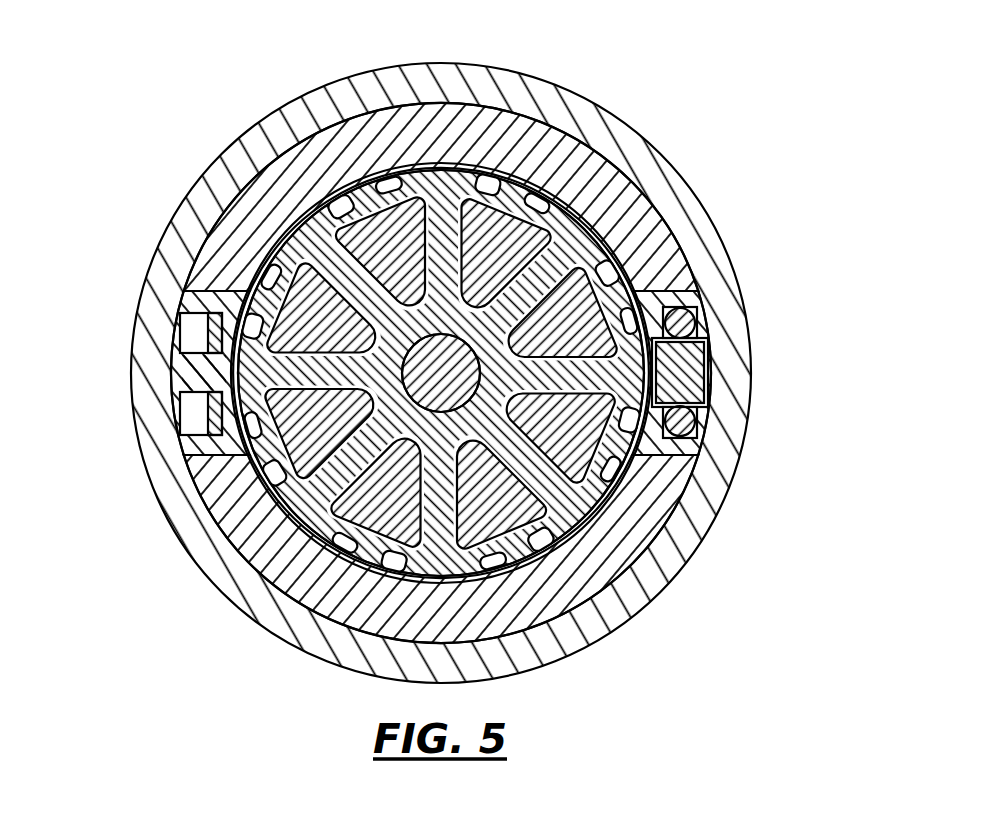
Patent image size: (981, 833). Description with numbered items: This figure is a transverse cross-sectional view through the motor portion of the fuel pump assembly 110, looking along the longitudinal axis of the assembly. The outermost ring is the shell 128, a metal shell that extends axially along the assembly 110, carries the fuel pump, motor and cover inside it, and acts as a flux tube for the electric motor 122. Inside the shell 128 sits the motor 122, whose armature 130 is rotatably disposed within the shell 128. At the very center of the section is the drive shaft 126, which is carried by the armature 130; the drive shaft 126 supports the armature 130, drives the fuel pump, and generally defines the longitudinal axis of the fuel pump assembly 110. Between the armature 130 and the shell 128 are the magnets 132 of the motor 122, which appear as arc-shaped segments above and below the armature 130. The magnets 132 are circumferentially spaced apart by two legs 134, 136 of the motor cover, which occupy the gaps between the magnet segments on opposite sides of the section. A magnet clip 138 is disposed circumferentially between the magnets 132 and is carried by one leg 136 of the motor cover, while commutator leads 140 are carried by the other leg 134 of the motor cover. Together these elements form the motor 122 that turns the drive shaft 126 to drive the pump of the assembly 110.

The fuel pump assembly 110 is at (176, 86).
The electric motor 122 is at (194, 226).
The drive shaft 126 is at (450, 360).
The shell 128 is at (146, 370).
The armature 130 is at (528, 170).
The magnets 132 is at (487, 116).
The leg 134 is at (192, 378).
The leg 136 is at (694, 302).
The magnet clip 138 is at (731, 371).
The commutator leads 140 is at (212, 338).